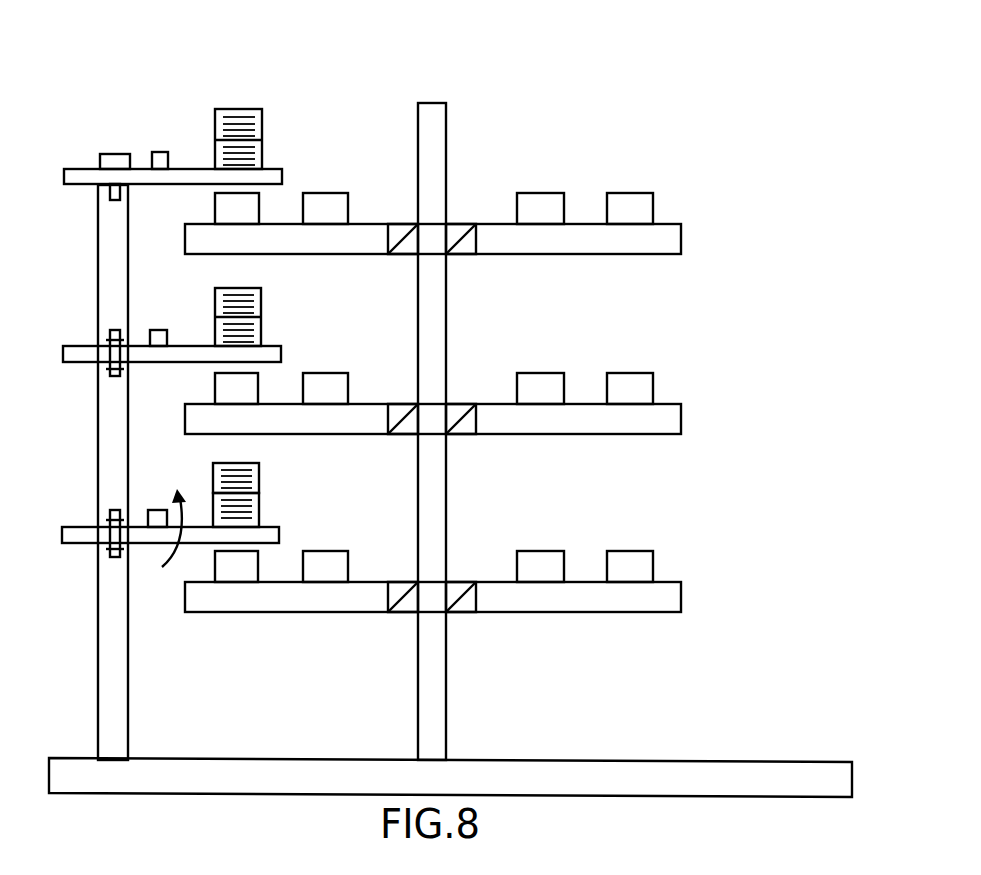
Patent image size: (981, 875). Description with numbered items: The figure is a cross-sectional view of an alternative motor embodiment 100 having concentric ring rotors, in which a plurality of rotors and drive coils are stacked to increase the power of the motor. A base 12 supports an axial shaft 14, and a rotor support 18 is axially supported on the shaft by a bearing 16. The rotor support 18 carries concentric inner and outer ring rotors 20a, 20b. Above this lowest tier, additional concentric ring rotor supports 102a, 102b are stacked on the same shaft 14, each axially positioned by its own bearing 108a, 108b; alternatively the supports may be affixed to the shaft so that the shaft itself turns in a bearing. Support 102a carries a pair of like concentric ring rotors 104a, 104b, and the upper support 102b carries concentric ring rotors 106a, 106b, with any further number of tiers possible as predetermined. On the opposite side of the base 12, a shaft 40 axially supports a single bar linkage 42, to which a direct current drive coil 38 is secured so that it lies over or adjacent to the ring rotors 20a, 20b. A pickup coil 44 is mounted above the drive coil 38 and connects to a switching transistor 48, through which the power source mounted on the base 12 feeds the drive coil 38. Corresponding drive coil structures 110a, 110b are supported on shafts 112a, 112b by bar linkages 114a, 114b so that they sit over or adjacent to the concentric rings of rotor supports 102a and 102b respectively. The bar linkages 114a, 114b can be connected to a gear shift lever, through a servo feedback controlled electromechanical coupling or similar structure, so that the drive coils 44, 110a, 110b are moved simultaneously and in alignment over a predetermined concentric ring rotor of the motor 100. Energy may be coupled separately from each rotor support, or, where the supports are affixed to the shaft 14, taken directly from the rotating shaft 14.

The motor embodiment 100 is at (690, 79).
The base 12 is at (852, 758).
The axial shaft 14 is at (435, 103).
The shaft 40 is at (108, 651).
The concentric ring rotor support 102b is at (681, 243).
The concentric ring rotor support 102a is at (681, 425).
The rotor support 18 is at (681, 600).
The bearing 108b is at (458, 223).
The bearing 108a is at (460, 404).
The bearing 16 is at (459, 582).
The concentric ring rotor 106a is at (560, 193).
The concentric ring rotor 106b is at (653, 212).
The concentric ring rotor 104a is at (570, 367).
The concentric ring rotor 104b is at (661, 375).
The inner ring rotor 20a is at (572, 556).
The outer ring rotor 20b is at (664, 557).
The shaft 112b is at (100, 237).
The shaft 112a is at (98, 430).
The bar linkage 42 is at (148, 536).
The bar linkage 114b is at (143, 172).
The bar linkage 114a is at (140, 348).
The switching transistor 48 is at (154, 510).
The drive coil structure 110b is at (266, 151).
The drive coil structure 110a is at (274, 320).
The pickup coil 44 is at (262, 478).
The direct current drive coil 38 is at (262, 510).